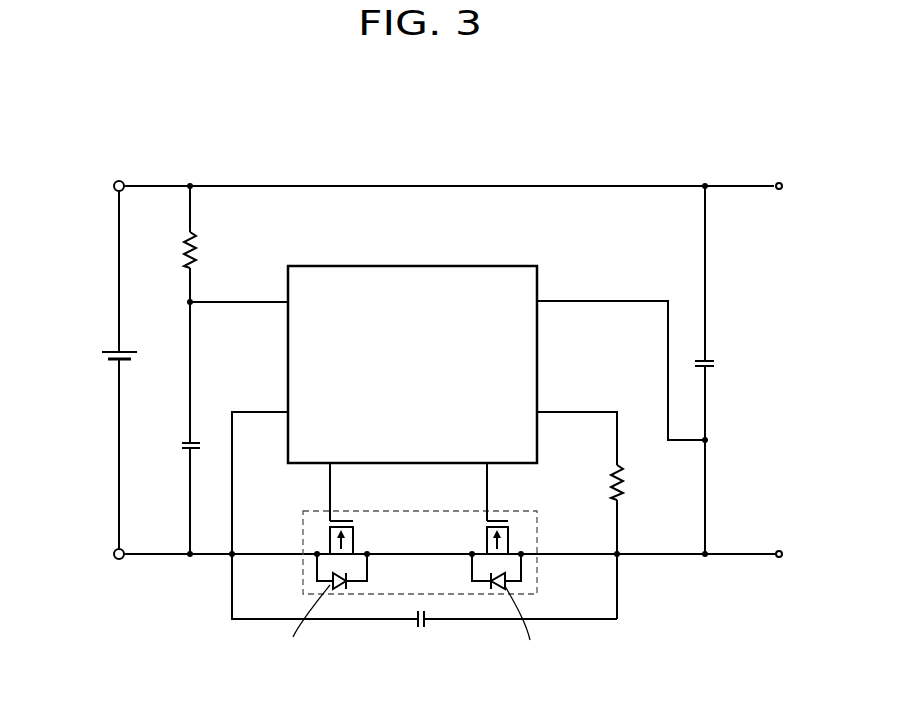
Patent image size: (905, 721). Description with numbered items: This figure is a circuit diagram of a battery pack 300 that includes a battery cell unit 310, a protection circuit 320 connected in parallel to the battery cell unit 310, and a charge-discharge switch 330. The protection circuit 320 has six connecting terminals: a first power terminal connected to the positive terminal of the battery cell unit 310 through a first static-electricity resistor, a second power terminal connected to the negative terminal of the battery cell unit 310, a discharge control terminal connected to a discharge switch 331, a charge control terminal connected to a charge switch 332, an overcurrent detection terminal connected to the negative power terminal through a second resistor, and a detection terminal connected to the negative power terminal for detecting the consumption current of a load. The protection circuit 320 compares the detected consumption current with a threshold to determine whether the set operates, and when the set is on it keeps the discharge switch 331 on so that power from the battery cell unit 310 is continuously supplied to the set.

The battery pack 300 is at (631, 168).
The battery cell unit 310 is at (101, 353).
The protection circuit 320 is at (419, 265).
The charge-discharge switch 330 is at (302, 578).
The discharge switch 331 is at (323, 541).
The charge switch 332 is at (517, 541).